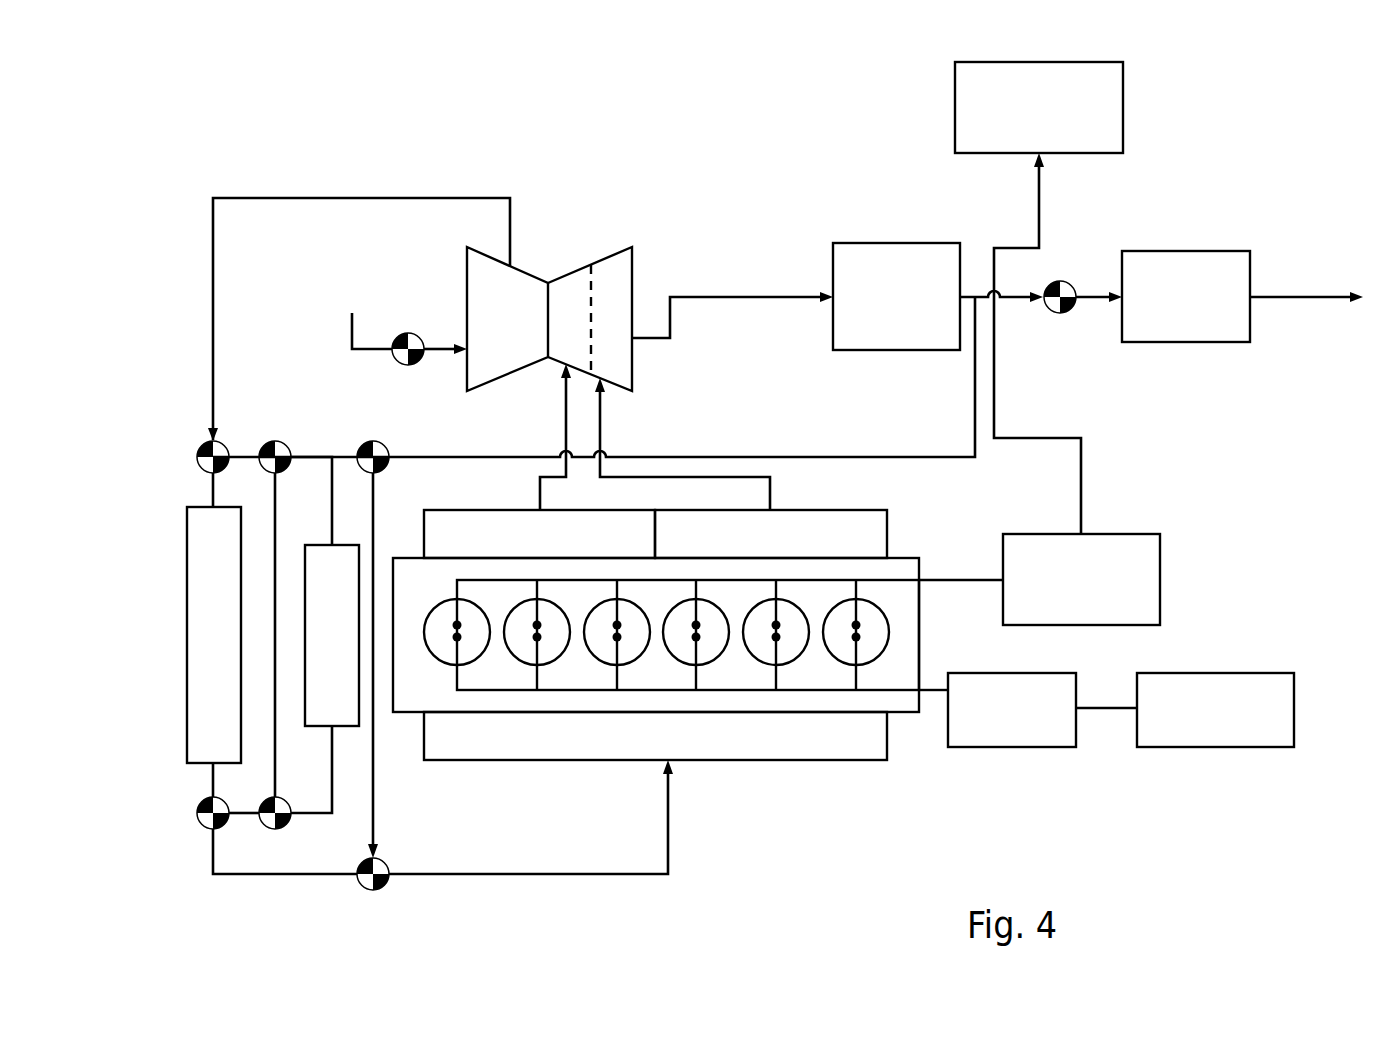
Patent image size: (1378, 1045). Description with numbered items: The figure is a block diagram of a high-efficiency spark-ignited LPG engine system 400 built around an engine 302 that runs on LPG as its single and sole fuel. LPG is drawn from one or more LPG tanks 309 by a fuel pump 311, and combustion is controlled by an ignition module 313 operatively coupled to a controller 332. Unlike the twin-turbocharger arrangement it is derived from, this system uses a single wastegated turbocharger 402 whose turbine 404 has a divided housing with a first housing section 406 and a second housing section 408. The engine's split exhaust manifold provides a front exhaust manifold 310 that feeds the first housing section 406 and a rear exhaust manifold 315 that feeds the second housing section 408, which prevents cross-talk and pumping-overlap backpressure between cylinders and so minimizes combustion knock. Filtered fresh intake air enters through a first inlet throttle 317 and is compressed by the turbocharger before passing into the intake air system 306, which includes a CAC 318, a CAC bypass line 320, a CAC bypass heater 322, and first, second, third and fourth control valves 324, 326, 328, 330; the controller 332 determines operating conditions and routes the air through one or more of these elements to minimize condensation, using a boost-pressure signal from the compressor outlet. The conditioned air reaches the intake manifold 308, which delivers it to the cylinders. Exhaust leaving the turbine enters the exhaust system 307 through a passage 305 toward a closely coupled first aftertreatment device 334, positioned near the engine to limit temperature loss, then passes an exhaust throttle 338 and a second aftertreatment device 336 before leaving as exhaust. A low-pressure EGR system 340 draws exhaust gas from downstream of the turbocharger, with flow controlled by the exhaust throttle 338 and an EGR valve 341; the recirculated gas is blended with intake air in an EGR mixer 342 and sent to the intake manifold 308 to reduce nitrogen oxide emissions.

The engine system 400 is at (1178, 118).
The engine 302 is at (919, 662).
The second turbocharger 305 is at (732, 291).
The intake air system 306 is at (255, 170).
The exhaust system 307 is at (838, 222).
The intake manifold 308 is at (655, 736).
The LPG tanks 309 is at (1185, 710).
The front exhaust manifold 310 is at (539, 507).
The fuel pump 311 is at (997, 710).
The ignition module 313 is at (1039, 579).
The rear exhaust manifold 315 is at (743, 507).
The first inlet throttle 317 is at (386, 343).
The CAC 318 is at (214, 652).
The CAC bypass line 320 is at (277, 528).
The CAC bypass heater 322 is at (325, 635).
The first control valve 324 is at (215, 470).
The second control valve 326 is at (268, 445).
The third control valve 328 is at (200, 815).
The fourth control valve 330 is at (277, 825).
The controller 332 is at (1039, 298).
The first aftertreatment device 334 is at (896, 296).
The second aftertreatment device 336 is at (1244, 296).
The exhaust throttle 338 is at (1041, 338).
The EGR system 340 is at (940, 455).
The EGR valve 341 is at (370, 443).
The EGR mixer 342 is at (484, 697).
The wastegated turbocharger 402 is at (577, 292).
The turbine 404 is at (636, 350).
The first housing section 406 is at (572, 297).
The second housing section 408 is at (617, 303).